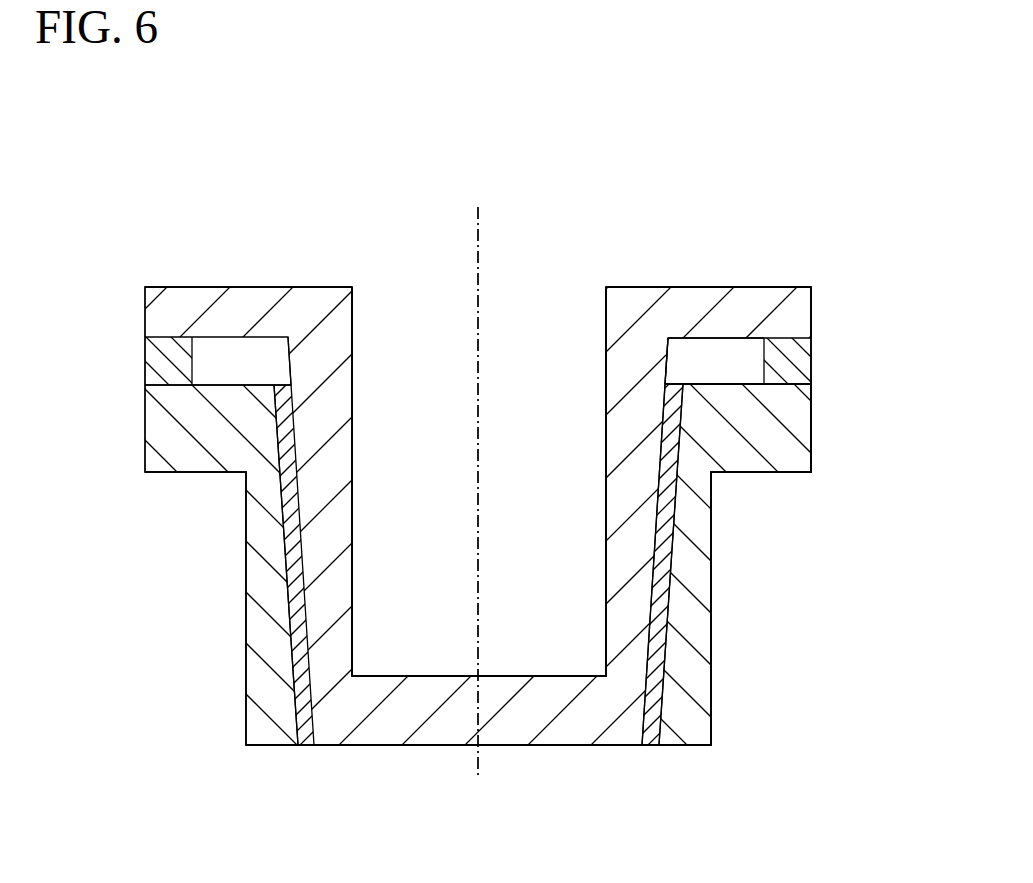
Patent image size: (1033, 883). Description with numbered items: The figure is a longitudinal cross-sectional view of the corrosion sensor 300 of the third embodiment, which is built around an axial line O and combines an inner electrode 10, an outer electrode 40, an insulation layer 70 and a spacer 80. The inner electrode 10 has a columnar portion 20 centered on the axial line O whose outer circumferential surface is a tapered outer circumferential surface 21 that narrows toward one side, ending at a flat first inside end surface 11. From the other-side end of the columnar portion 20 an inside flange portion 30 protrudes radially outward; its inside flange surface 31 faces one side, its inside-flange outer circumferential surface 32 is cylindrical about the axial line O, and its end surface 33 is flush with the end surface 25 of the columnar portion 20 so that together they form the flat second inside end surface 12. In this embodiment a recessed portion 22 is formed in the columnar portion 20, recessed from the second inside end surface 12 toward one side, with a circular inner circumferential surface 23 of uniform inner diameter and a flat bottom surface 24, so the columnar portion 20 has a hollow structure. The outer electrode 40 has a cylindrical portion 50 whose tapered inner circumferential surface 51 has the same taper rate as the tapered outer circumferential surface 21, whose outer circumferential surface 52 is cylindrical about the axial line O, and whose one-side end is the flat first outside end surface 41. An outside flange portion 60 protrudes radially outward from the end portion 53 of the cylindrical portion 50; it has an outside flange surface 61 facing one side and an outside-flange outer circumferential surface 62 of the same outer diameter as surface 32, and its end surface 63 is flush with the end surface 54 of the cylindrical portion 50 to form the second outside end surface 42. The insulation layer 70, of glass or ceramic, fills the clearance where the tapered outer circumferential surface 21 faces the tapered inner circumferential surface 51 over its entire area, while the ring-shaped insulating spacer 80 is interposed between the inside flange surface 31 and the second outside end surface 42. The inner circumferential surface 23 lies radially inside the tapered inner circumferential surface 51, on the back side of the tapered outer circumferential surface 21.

The corrosion sensor 300 is at (212, 222).
The inner electrode 10 is at (693, 278).
The first inside end surface 11 is at (528, 745).
The second inside end surface 12 is at (633, 278).
The columnar portion 20 is at (410, 710).
The tapered outer circumferential surface 21 is at (650, 633).
The recessed portion 22 is at (403, 283).
The inner circumferential surface 23 is at (362, 330).
The bottom surface 24 is at (445, 676).
The end surface 25 is at (333, 287).
The axial line O is at (478, 237).
The inside flange portion 30 is at (745, 336).
The inside flange surface 31 is at (790, 339).
The inside-flange outer circumferential surface 32 is at (812, 305).
The end surface 33 is at (770, 312).
The outer electrode 40 is at (730, 725).
The first outside end surface 41 is at (682, 745).
The second outside end surface 42 is at (805, 374).
The cylindrical portion 50 is at (690, 597).
The tapered inner circumferential surface 51 is at (670, 547).
The outer circumferential surface 52 is at (712, 685).
The end portion 53 is at (687, 437).
The end surface 54 is at (698, 385).
The outside flange portion 60 is at (783, 425).
The outside flange surface 61 is at (760, 475).
The outside-flange outer circumferential surface 62 is at (812, 448).
The end surface 63 is at (748, 384).
The insulation layer 70 is at (305, 697).
The spacer 80 is at (165, 362).